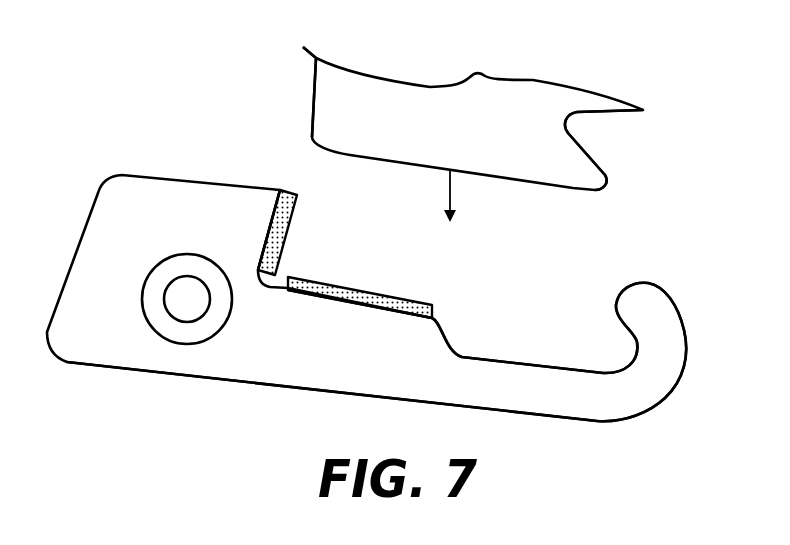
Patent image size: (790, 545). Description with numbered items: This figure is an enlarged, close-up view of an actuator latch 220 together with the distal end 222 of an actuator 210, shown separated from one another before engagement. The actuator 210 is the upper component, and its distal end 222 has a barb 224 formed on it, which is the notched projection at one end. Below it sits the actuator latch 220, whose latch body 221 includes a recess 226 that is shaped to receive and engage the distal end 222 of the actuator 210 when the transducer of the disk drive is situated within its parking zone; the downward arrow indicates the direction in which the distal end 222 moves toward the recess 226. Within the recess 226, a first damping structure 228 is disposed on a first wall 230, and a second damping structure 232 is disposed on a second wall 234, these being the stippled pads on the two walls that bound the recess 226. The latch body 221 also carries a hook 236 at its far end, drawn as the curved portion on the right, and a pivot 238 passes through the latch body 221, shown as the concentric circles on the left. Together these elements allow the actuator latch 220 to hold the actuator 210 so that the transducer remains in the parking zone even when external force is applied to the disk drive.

The actuator 210 is at (481, 72).
The distal end 222 is at (309, 95).
The barb 224 is at (613, 174).
The actuator latch 220 is at (183, 176).
The latch body 221 is at (268, 350).
The pivot 238 is at (182, 252).
The first damping structure 228 is at (292, 232).
The first wall 230 is at (262, 241).
The second damping structure 232 is at (378, 289).
The second wall 234 is at (354, 310).
The recess 226 is at (567, 249).
The hook 236 is at (656, 282).